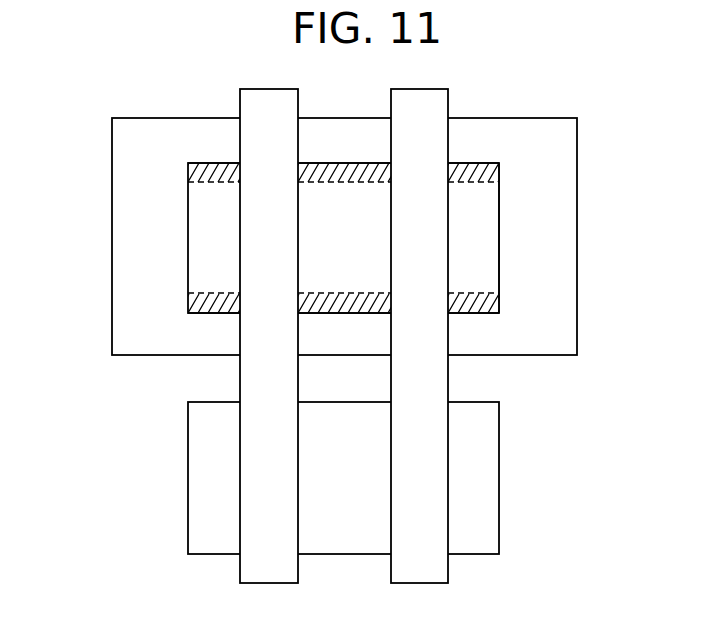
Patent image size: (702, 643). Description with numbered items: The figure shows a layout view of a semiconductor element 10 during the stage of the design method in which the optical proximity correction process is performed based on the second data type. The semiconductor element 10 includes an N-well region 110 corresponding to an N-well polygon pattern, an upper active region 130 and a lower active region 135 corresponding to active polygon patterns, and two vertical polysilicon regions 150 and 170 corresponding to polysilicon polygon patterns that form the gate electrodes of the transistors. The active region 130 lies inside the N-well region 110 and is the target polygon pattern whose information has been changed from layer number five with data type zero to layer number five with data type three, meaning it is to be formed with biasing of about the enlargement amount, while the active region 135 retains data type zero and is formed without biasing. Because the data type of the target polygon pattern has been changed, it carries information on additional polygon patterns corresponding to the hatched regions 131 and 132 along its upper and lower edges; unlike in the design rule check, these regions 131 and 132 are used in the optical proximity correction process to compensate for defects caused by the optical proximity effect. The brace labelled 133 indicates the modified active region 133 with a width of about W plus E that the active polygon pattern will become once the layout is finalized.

The semiconductor element 10 is at (333, 88).
The N-well region 110 is at (112, 312).
The active region 130 is at (186, 185).
The region 131 is at (186, 163).
The region 132 is at (186, 293).
The modified active region 133 is at (502, 163).
The active region 135 is at (188, 476).
The polysilicon region 150 is at (240, 97).
The polysilicon region 170 is at (448, 97).